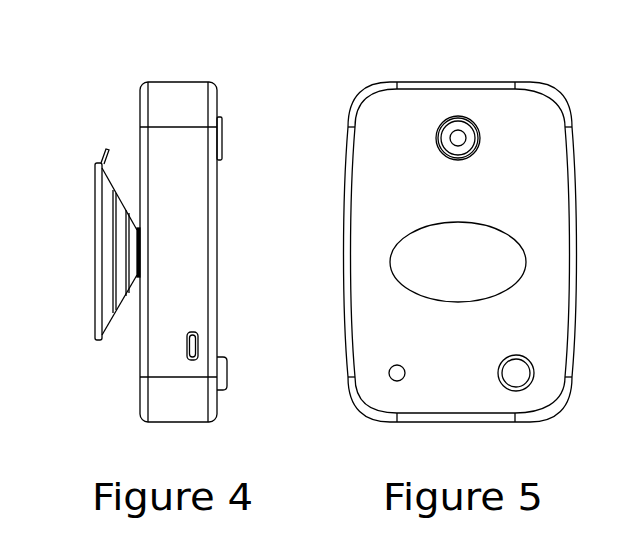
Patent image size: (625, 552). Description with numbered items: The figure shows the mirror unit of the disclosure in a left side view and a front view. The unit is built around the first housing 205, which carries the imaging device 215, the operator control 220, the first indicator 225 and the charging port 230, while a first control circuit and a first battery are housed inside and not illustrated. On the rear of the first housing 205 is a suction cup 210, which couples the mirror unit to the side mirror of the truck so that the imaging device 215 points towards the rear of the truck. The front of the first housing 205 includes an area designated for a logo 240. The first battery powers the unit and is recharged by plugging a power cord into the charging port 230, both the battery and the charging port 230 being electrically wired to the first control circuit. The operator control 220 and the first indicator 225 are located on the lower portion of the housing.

In FIG. 4, the first housing 205 is at (180, 92).
In FIG. 5, the first housing 205 is at (385, 113).
In FIG. 4, the suction cup 210 is at (98, 323).
In FIG. 4, the imaging device 215 is at (220, 138).
In FIG. 5, the imaging device 215 is at (462, 125).
In FIG. 4, the operator control 220 is at (228, 378).
In FIG. 5, the operator control 220 is at (520, 373).
In FIG. 5, the first indicator 225 is at (396, 381).
In FIG. 4, the charging port 230 is at (196, 332).
In FIG. 5, the logo 240 is at (508, 258).